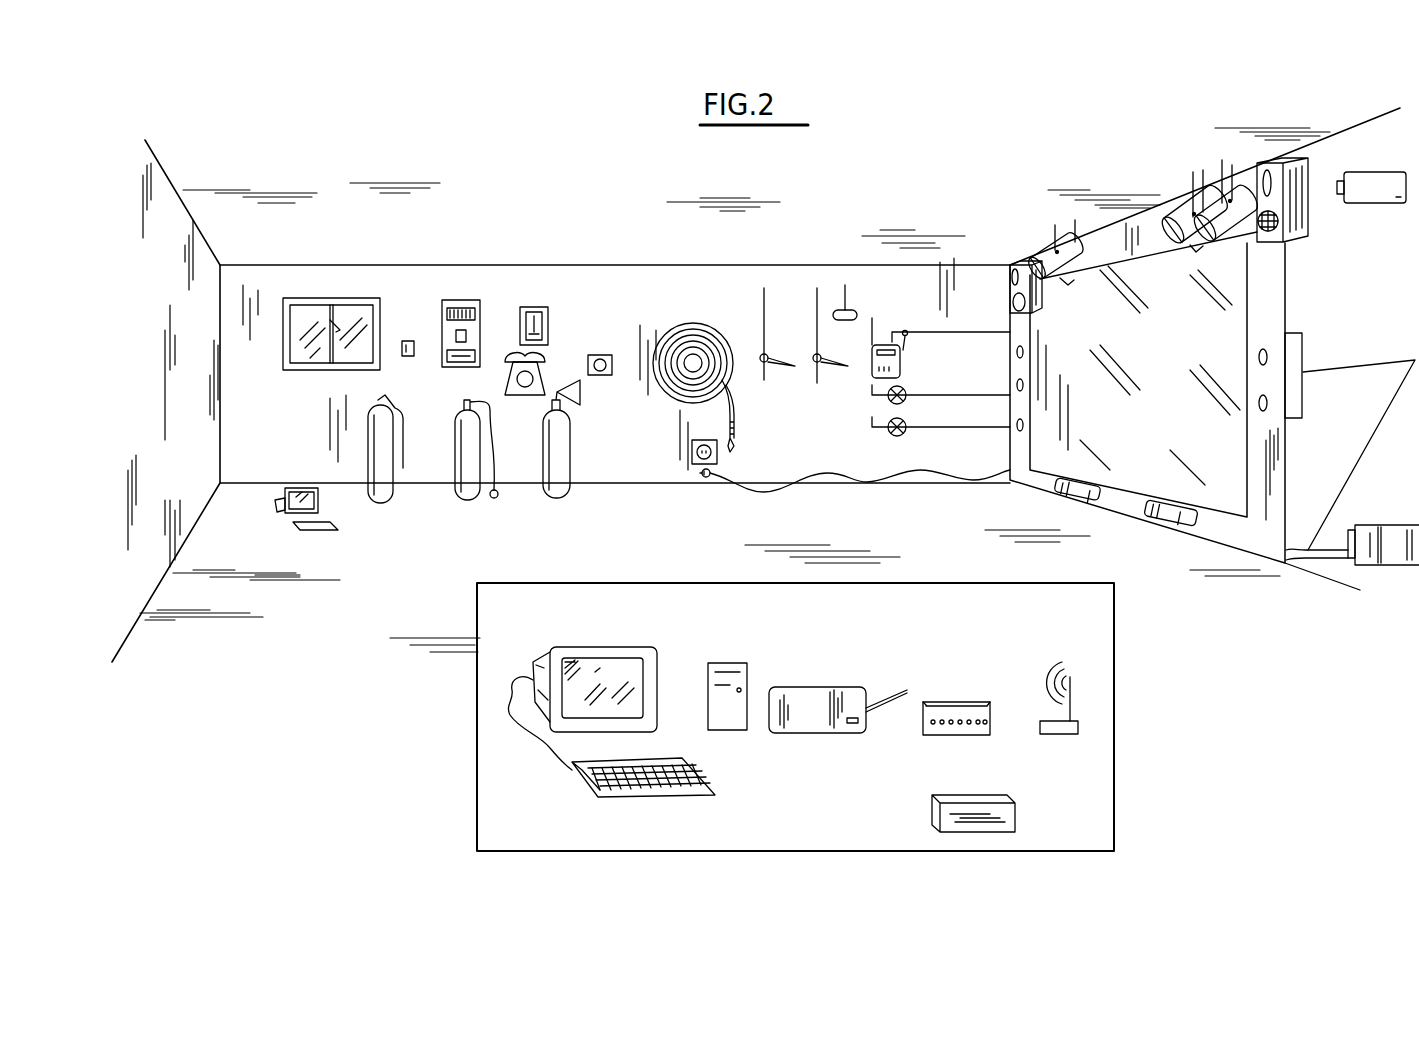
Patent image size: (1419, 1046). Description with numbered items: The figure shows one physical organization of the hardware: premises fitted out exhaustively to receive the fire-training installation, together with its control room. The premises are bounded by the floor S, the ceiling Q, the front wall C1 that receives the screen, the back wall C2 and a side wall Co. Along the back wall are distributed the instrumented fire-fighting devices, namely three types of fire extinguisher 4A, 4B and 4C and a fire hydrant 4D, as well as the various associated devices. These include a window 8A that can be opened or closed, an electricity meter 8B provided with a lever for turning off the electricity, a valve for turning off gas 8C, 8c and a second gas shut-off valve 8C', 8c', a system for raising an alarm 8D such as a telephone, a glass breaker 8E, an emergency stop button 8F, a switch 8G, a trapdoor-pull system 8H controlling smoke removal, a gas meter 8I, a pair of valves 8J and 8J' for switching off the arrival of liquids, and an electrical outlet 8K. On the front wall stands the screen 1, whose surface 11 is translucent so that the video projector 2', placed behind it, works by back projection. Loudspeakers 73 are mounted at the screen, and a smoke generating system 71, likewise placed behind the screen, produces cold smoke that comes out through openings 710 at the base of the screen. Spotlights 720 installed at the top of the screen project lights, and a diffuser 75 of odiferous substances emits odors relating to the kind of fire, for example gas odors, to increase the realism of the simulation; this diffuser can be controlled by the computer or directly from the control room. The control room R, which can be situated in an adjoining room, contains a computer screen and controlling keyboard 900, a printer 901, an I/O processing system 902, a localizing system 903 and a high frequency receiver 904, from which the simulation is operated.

The screen 1 is at (1100, 180).
The video projector 2' is at (1371, 217).
The surface of the screen 11 is at (1220, 297).
The smoke generating system 71 is at (1398, 560).
The loudspeakers 73 is at (1008, 265).
The diffuser of odiferous substances 75 is at (1303, 357).
The openings 710 is at (1070, 490).
The spotlights 720 is at (1033, 247).
The fire extinguisher 4A is at (366, 460).
The fire extinguisher 4B is at (455, 494).
The fire extinguisher 4C is at (545, 492).
The fire hydrant 4D is at (712, 325).
The window 8A is at (297, 380).
The electricity meter 8B is at (468, 298).
The valve for turning off gas 8c is at (776, 295).
The valve for turning off gas 8C is at (776, 295).
The valve for turning off gas 8c' is at (828, 286).
The valve for turning off gas 8C' is at (828, 286).
The system for raising an alarm 8D is at (510, 357).
The glass breaker 8E is at (556, 328).
The emergency stop button 8F is at (598, 350).
The switch 8G is at (407, 341).
The trapdoor-pull system 8H is at (855, 302).
The gas meter 8I is at (912, 364).
The valve for switching off the arrival of liquids 8J is at (896, 418).
The valve for switching off the arrival of liquids 8J' is at (941, 443).
The electrical outlet 8K is at (692, 466).
The computer screen and controlling keyboard 900 is at (668, 645).
The printer 901 is at (830, 684).
The I/O processing system 902 is at (970, 699).
The localizing system 903 is at (958, 840).
The high frequency receiver 904 is at (1057, 740).
The front wall C1 is at (1258, 527).
The back wall C2 is at (168, 208).
The side wall Co is at (318, 283).
The ceiling Q is at (384, 146).
The control room R is at (477, 775).
The floor S is at (330, 648).